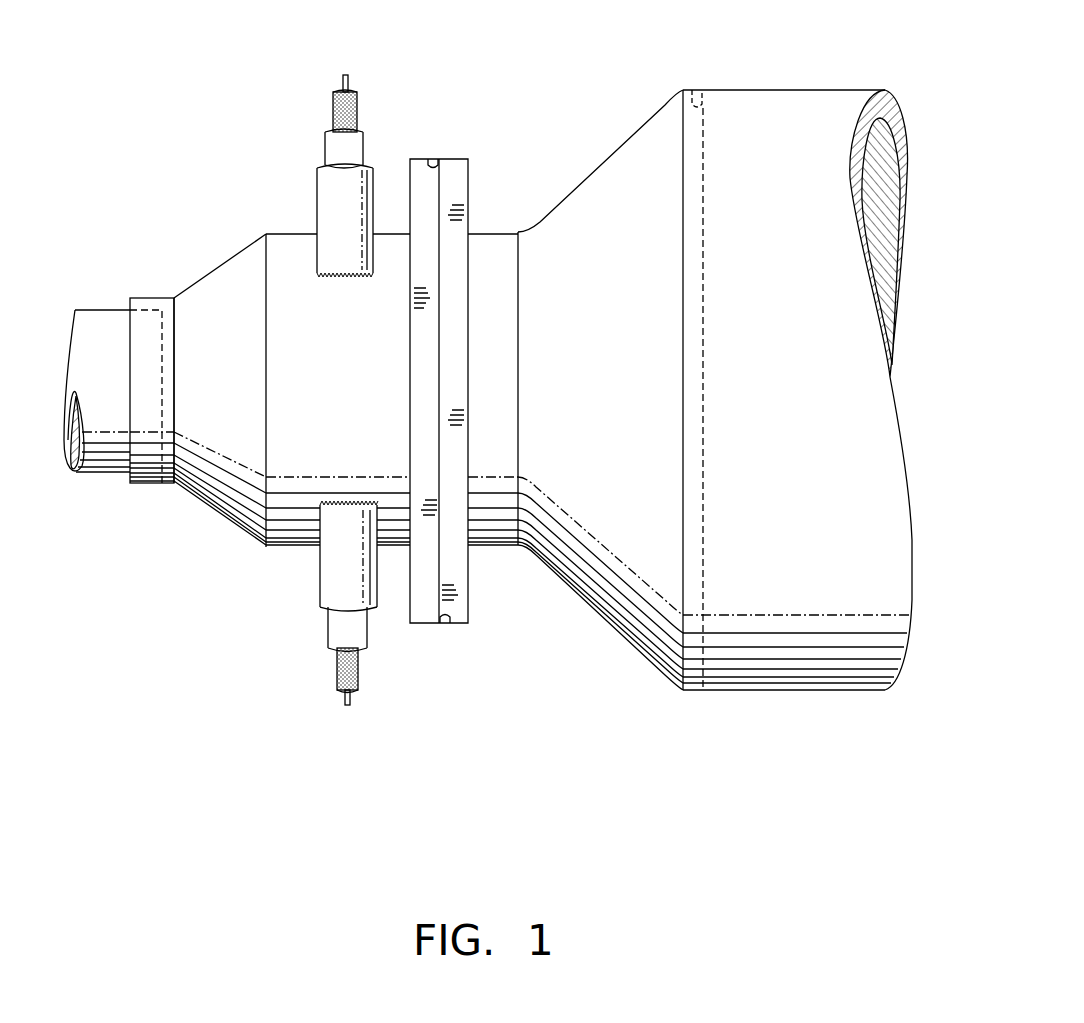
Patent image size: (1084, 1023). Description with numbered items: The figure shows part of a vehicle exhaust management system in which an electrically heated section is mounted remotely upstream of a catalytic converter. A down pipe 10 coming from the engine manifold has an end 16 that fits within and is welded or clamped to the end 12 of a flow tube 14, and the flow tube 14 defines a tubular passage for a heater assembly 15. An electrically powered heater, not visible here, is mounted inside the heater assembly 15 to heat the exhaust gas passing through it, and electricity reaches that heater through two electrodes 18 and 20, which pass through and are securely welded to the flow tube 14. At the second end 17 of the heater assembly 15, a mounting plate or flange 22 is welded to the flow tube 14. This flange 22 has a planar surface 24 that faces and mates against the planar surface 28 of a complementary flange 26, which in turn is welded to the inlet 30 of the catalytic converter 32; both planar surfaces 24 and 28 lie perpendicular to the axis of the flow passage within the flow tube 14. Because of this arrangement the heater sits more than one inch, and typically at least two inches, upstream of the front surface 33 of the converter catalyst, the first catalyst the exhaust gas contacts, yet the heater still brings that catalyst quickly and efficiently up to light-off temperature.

The down pipe 10 is at (100, 310).
The end of flow tube 12 is at (143, 485).
The flow tube 14 is at (232, 270).
The heater assembly 15 is at (232, 532).
The end of down pipe 16 is at (166, 318).
The second end of heater assembly 17 is at (383, 543).
The electrode 18 is at (374, 195).
The electrode 20 is at (325, 588).
The mounting plate or flange 22 is at (428, 160).
The planar surface 24 is at (447, 625).
The complementary flange 26 is at (462, 597).
The planar surface 28 is at (433, 165).
The inlet of catalytic converter 30 is at (487, 224).
The catalytic converter 32 is at (620, 140).
The front surface of converter catalyst 33 is at (693, 90).